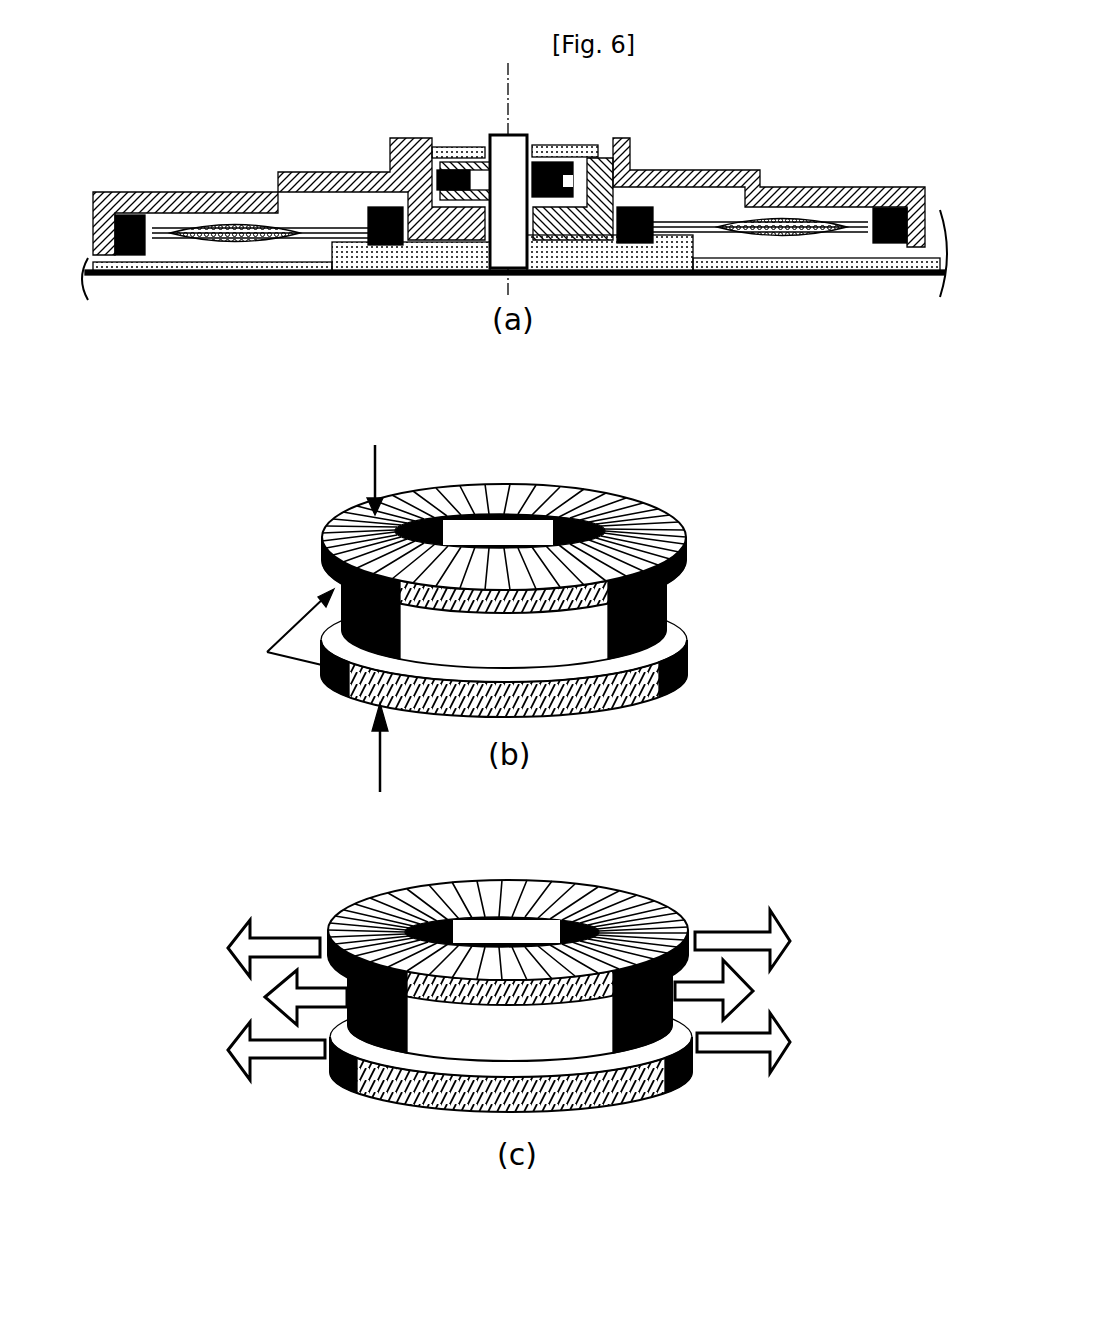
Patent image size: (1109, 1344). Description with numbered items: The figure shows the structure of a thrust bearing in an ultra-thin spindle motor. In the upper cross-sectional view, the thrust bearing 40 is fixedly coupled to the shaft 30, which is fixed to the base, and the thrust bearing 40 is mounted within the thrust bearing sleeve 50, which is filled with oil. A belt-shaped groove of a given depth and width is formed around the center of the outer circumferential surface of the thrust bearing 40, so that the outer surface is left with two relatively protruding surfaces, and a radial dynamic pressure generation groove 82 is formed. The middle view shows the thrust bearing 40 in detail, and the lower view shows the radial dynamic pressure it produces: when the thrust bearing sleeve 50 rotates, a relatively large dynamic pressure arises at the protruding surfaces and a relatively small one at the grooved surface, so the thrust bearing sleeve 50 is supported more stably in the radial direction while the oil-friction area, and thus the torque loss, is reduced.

The shaft 30 is at (542, 272).
The thrust bearing 40 is at (557, 158).
The thrust bearing sleeve 50 is at (595, 270).
The radial dynamic pressure generation groove 82 is at (277, 629).